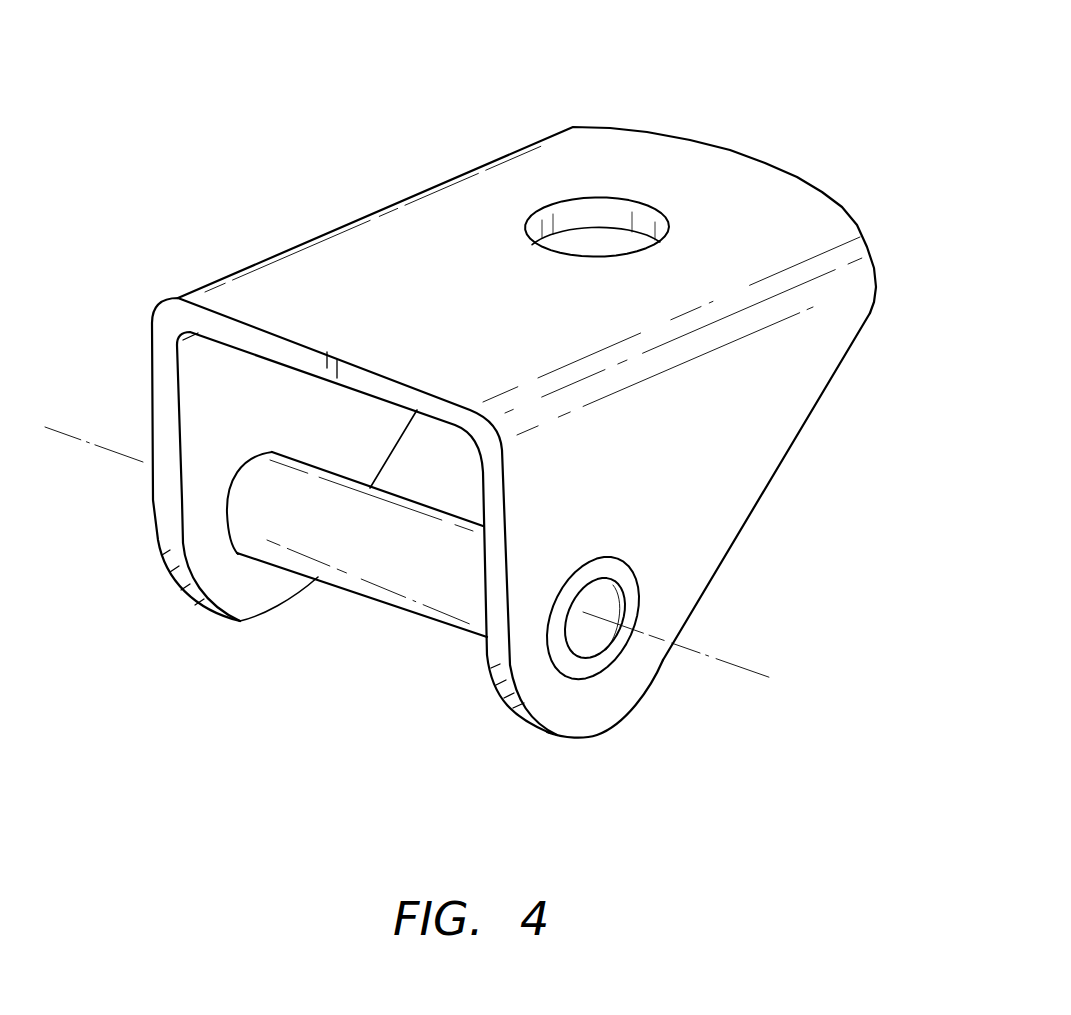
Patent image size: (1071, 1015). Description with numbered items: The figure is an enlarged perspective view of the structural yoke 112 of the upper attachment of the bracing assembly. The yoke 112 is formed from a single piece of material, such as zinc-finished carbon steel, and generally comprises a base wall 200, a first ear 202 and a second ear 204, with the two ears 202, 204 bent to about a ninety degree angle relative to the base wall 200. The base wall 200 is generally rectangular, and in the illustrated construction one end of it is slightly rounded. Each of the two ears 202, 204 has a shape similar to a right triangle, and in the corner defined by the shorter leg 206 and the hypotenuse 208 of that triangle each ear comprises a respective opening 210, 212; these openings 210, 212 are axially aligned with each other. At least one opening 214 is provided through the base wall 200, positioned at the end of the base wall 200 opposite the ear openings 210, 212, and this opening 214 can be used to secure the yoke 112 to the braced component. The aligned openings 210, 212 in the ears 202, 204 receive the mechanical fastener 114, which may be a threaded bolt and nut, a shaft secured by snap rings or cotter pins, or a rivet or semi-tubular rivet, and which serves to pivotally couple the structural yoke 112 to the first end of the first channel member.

The structural yoke 112 is at (777, 109).
The mechanical fastener 114 is at (400, 562).
The base wall 200 is at (300, 358).
The first ear 202 is at (498, 634).
The second ear 204 is at (173, 478).
The shorter leg 206 is at (493, 588).
The hypotenuse 208 is at (770, 480).
The opening 210 is at (603, 657).
The opening 212 is at (248, 560).
The opening 214 is at (612, 197).